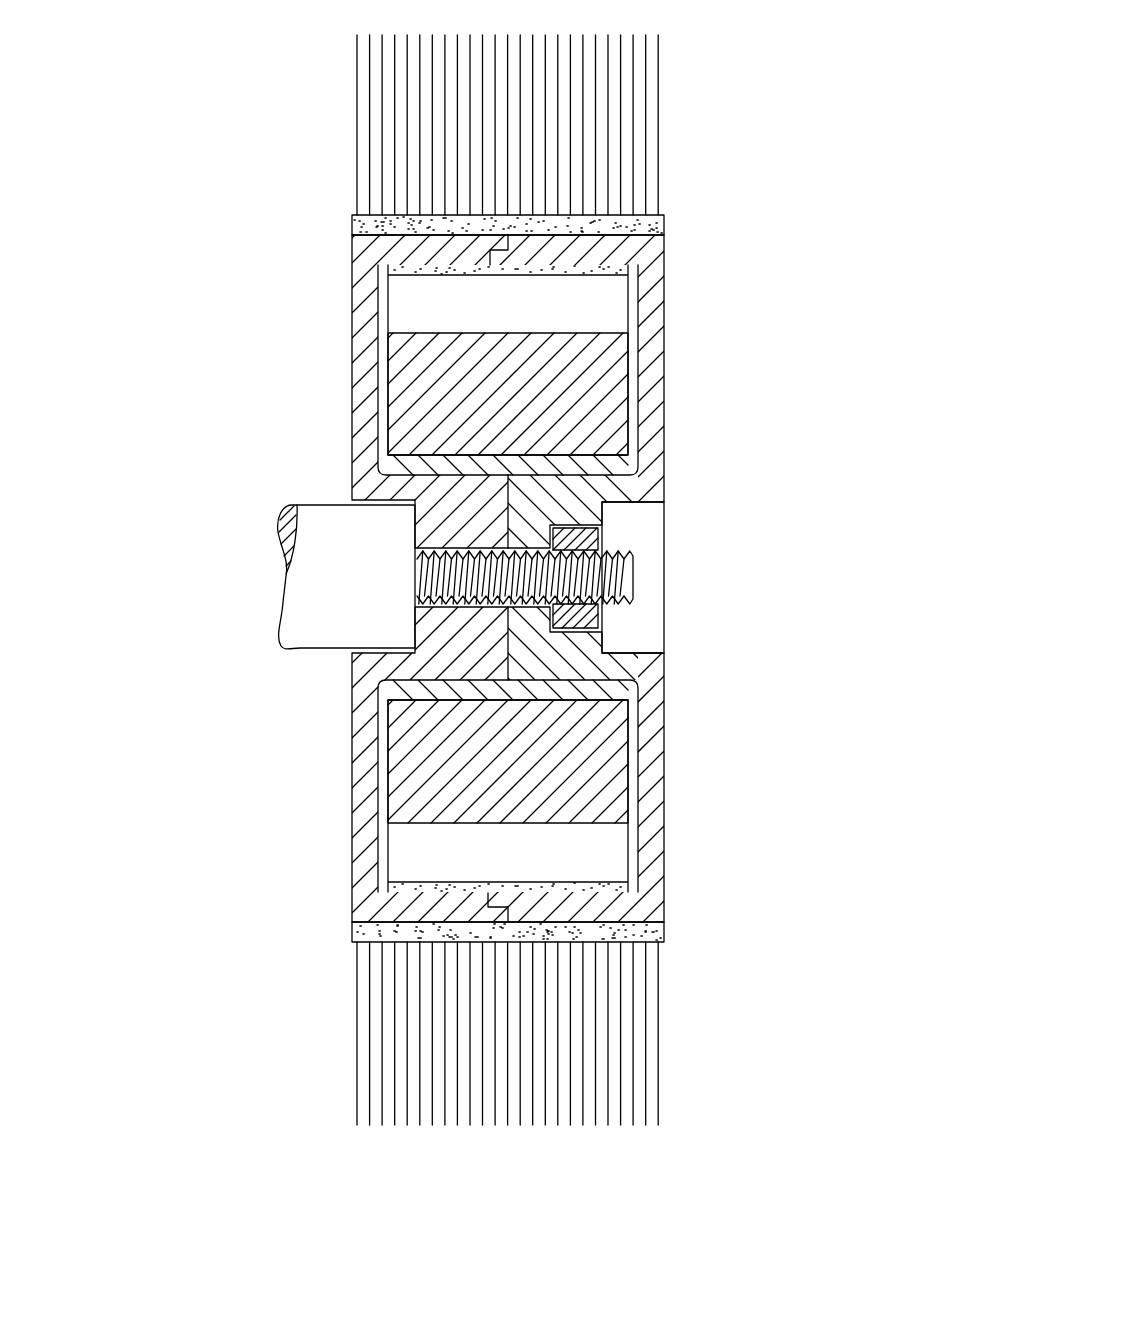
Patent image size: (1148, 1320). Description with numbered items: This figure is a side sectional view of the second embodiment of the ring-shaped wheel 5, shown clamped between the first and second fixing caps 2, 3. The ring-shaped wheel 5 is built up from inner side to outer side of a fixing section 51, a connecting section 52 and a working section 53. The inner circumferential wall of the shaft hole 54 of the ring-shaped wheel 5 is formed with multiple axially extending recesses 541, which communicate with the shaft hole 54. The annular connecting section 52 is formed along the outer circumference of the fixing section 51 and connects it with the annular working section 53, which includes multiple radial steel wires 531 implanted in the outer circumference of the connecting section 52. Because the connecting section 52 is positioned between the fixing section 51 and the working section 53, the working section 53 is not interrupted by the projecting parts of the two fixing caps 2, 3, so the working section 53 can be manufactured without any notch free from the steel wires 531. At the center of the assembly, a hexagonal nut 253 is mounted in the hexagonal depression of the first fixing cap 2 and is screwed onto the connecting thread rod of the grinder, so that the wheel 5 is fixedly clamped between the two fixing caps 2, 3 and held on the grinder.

The ring-shaped wheel 5 is at (332, 191).
The working section 53 is at (612, 572).
The steel wires 531 is at (660, 52).
The connecting section 52 is at (645, 227).
The fixing section 51 is at (665, 280).
The shaft hole 54 is at (595, 266).
The recesses 541 is at (558, 236).
The hexagonal nut 253 is at (603, 537).
The first fixing cap 2 is at (652, 786).
The second fixing cap 3 is at (355, 780).